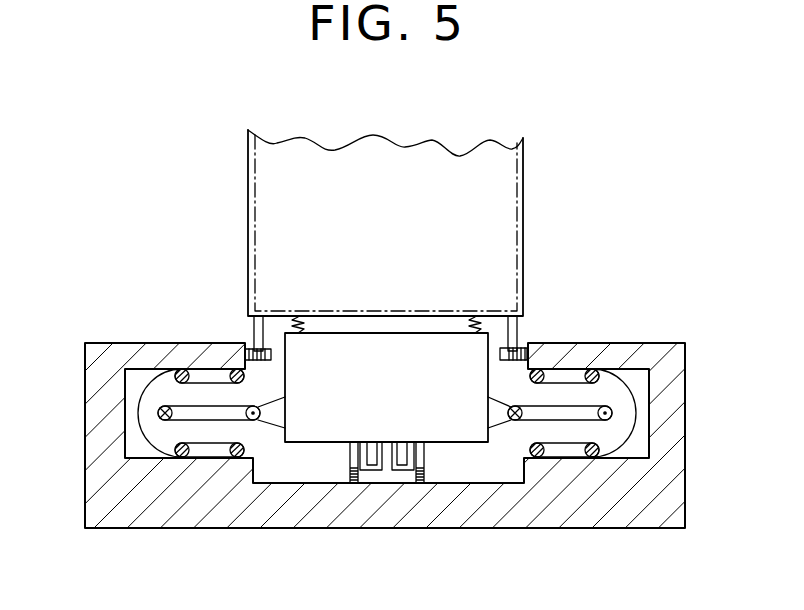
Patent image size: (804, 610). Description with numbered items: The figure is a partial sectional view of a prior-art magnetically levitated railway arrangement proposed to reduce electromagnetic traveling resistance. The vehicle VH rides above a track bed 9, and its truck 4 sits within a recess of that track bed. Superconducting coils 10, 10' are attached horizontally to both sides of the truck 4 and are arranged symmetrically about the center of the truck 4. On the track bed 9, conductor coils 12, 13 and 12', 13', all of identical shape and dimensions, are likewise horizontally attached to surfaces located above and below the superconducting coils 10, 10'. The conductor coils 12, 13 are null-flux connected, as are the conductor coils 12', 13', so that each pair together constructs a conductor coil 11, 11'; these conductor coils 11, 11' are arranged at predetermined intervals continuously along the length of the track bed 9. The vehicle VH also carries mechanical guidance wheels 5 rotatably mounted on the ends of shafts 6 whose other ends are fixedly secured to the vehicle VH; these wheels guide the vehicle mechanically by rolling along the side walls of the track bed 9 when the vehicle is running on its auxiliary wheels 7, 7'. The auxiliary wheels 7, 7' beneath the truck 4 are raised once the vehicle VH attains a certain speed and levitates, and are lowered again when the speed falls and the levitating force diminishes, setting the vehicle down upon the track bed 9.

The vehicle VH is at (487, 160).
The truck 4 is at (378, 343).
The mechanical guidance wheel 5 is at (250, 350).
The shaft 6 is at (272, 318).
The auxiliary wheel 7 is at (349, 518).
The auxiliary wheel 7' is at (421, 518).
The track bed 9 is at (572, 522).
The superconducting coil 10 is at (161, 450).
The superconducting coil 10' is at (612, 383).
The conductor coil 11 is at (102, 413).
The conductor coil 11' is at (672, 413).
The conductor coil 12 is at (192, 336).
The conductor coil 12' is at (597, 329).
The conductor coil 13 is at (209, 516).
The conductor coil 13' is at (557, 516).